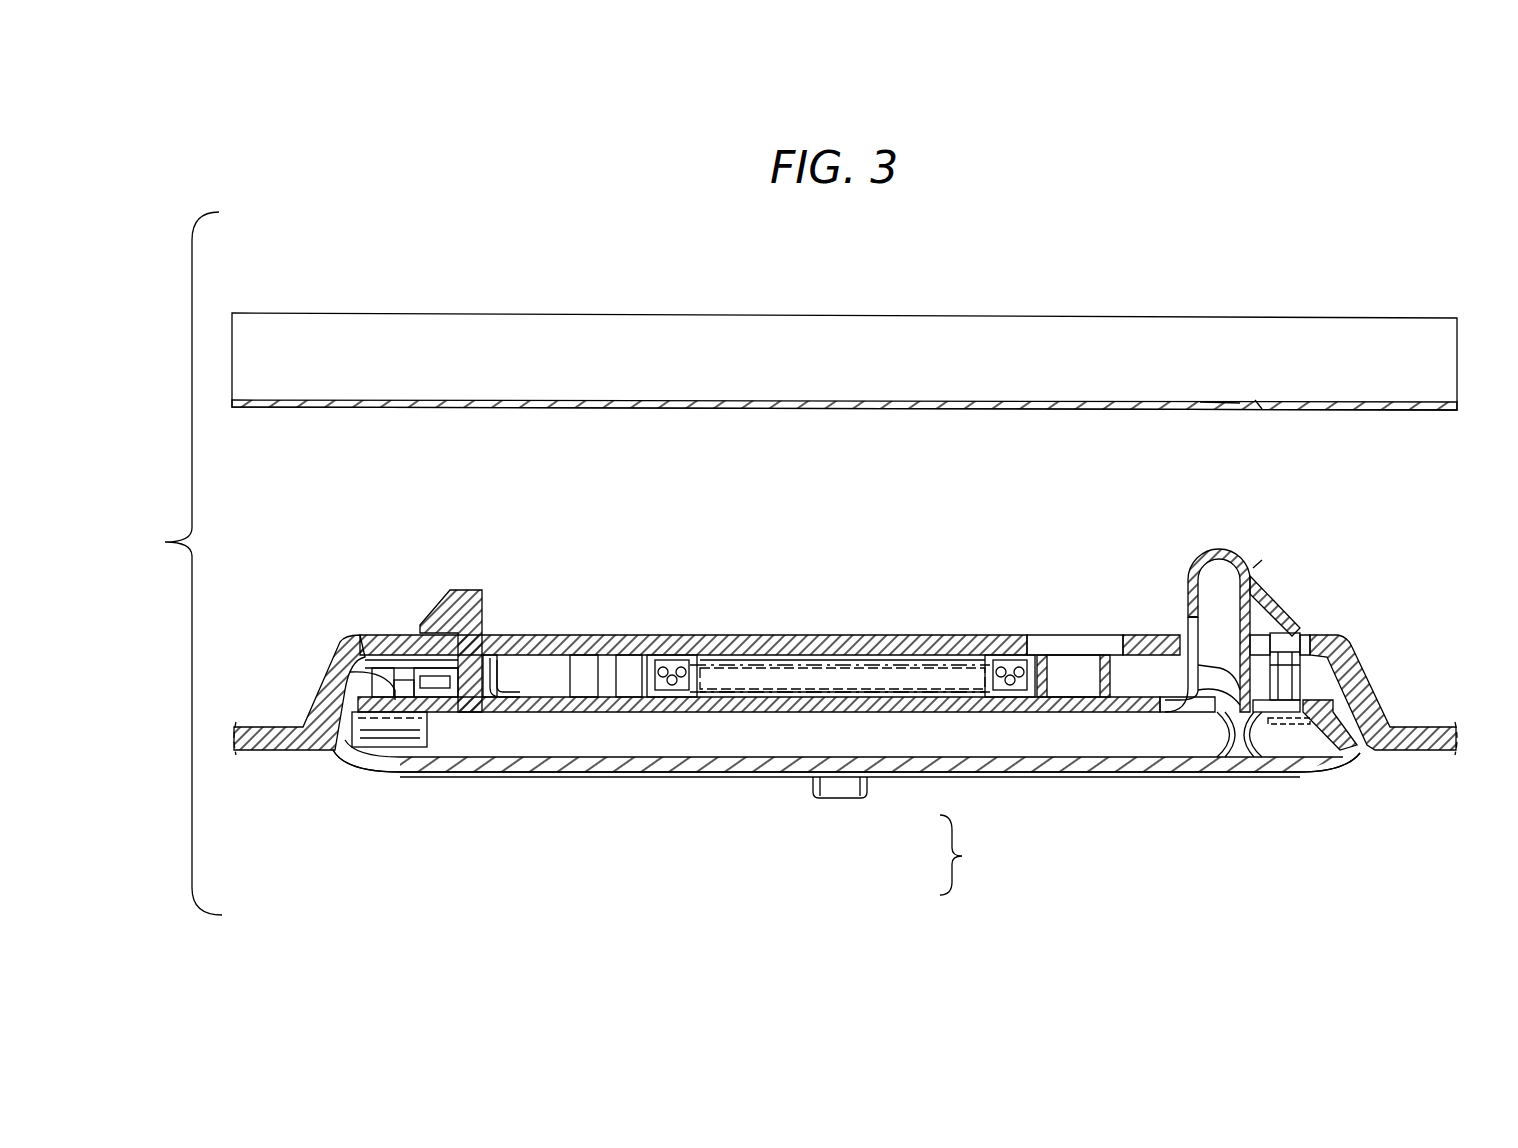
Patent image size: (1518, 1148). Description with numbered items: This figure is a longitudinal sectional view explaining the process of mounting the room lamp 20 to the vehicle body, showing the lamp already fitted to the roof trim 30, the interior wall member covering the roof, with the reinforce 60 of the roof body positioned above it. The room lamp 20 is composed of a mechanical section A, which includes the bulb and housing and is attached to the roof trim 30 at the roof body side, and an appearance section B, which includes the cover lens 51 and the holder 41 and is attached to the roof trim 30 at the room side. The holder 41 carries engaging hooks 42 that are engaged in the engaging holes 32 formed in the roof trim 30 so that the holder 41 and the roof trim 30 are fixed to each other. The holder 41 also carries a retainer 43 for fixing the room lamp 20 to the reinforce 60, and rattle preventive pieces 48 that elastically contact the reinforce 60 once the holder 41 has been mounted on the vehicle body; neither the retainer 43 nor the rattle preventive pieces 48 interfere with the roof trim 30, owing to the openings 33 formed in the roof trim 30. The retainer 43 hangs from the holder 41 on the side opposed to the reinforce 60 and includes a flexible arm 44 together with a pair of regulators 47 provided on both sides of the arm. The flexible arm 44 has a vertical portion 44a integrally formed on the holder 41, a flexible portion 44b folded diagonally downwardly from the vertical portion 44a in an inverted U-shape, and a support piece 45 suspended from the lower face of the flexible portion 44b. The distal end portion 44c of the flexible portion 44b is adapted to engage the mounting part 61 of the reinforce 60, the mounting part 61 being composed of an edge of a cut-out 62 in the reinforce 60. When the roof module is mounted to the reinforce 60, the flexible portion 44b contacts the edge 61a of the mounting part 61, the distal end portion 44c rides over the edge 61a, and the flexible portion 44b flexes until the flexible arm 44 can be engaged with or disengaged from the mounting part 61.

The room lamp 20 is at (1132, 783).
The roof trim 30 is at (340, 636).
The engaging holes 32 is at (492, 640).
The openings 33 is at (1180, 632).
The holder 41 is at (883, 714).
The engaging hooks 42 is at (466, 588).
The retainer 43 is at (1278, 572).
The flexible arm 44 is at (1233, 551).
The vertical portion 44a is at (1186, 590).
The flexible portion 44b is at (1274, 597).
The distal end portion 44c is at (1300, 636).
The support piece 45 is at (1268, 772).
The regulators 47 is at (506, 676).
The rattle preventive pieces 48 is at (1353, 662).
The cover lens 51 is at (771, 781).
The reinforce 60 is at (1312, 313).
The mounting part 61 is at (1290, 400).
The edge 61a is at (1262, 402).
The cut-out 62 is at (1226, 405).
The mechanical section A is at (782, 675).
The appearance section B is at (963, 855).